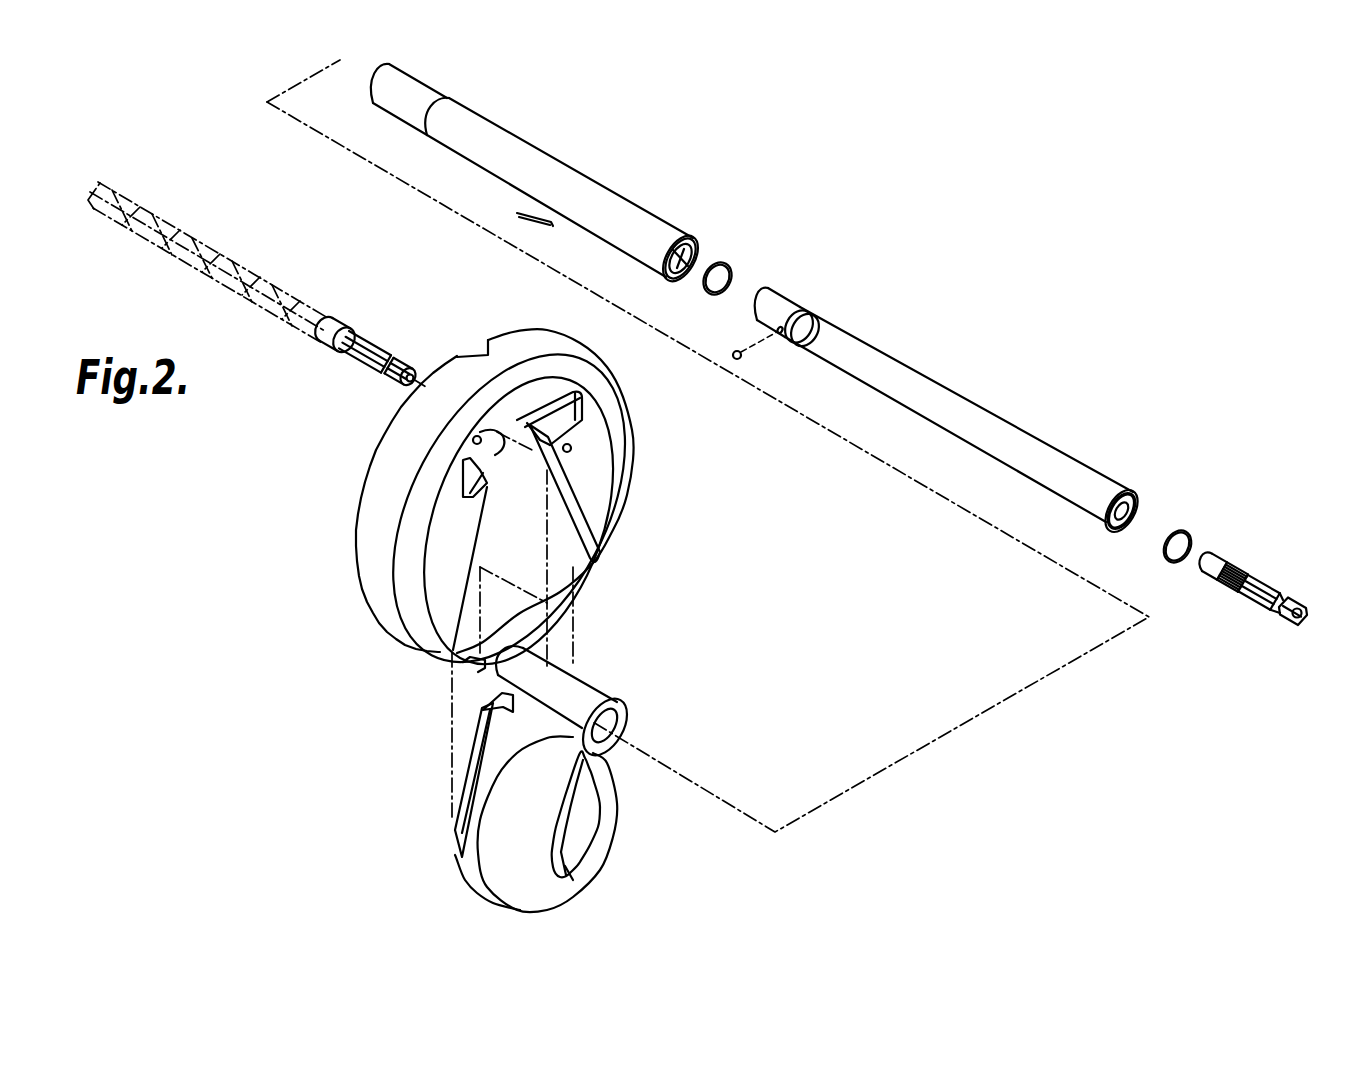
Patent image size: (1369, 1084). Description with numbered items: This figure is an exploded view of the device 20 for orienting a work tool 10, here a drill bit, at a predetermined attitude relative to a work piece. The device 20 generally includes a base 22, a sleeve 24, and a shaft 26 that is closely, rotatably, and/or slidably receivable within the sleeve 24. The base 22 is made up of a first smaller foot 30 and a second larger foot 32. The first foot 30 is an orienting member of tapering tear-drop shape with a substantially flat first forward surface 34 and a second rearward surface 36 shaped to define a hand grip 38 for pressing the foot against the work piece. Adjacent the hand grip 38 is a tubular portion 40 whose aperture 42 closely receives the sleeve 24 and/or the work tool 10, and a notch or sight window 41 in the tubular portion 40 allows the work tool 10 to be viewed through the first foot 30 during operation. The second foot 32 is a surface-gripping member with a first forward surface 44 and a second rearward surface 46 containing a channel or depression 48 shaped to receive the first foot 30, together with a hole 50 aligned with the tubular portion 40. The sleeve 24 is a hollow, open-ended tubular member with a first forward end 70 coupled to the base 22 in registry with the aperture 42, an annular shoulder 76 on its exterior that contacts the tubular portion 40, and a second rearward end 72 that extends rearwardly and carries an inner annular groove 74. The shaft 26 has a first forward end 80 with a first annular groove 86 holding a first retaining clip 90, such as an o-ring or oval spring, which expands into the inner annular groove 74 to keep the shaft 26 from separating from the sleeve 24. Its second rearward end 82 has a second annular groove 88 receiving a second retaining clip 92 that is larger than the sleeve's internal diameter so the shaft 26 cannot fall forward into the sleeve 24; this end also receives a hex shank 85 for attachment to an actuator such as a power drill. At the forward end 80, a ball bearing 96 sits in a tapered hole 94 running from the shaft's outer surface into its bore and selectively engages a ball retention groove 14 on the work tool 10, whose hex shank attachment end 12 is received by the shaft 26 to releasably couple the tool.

The work tool 10 is at (195, 238).
The hex shank attachment end 12 is at (402, 357).
The ball retention groove 14 is at (385, 350).
The device 20 is at (1040, 207).
The base 22 is at (345, 655).
The sleeve 24 is at (540, 214).
The shaft 26 is at (964, 401).
The first foot 30 is at (614, 838).
The second foot 32 is at (630, 496).
The first forward surface 34 is at (452, 826).
The second rearward surface 36 is at (575, 860).
The hand grip 38 is at (568, 875).
The tubular portion 40 is at (595, 680).
The sight window 41 is at (500, 689).
The aperture 42 is at (613, 725).
The first forward surface 44 is at (393, 417).
The second rearward surface 46 is at (610, 440).
The channel or depression 48 is at (540, 578).
The hole 50 is at (490, 448).
The first forward end 70 is at (390, 65).
The second rearward end 72 is at (698, 246).
The inner annular groove 74 is at (676, 281).
The annular shoulder 76 is at (449, 98).
The first forward end 80 is at (772, 290).
The second rearward end 82 is at (1128, 492).
The hex shank 85 is at (1305, 619).
The first annular groove 86 is at (812, 312).
The second annular groove 88 is at (1104, 528).
The first retaining clip 90 is at (728, 268).
The second retaining clip 92 is at (1184, 530).
The tapered hole 94 is at (780, 336).
The ball bearing 96 is at (735, 351).